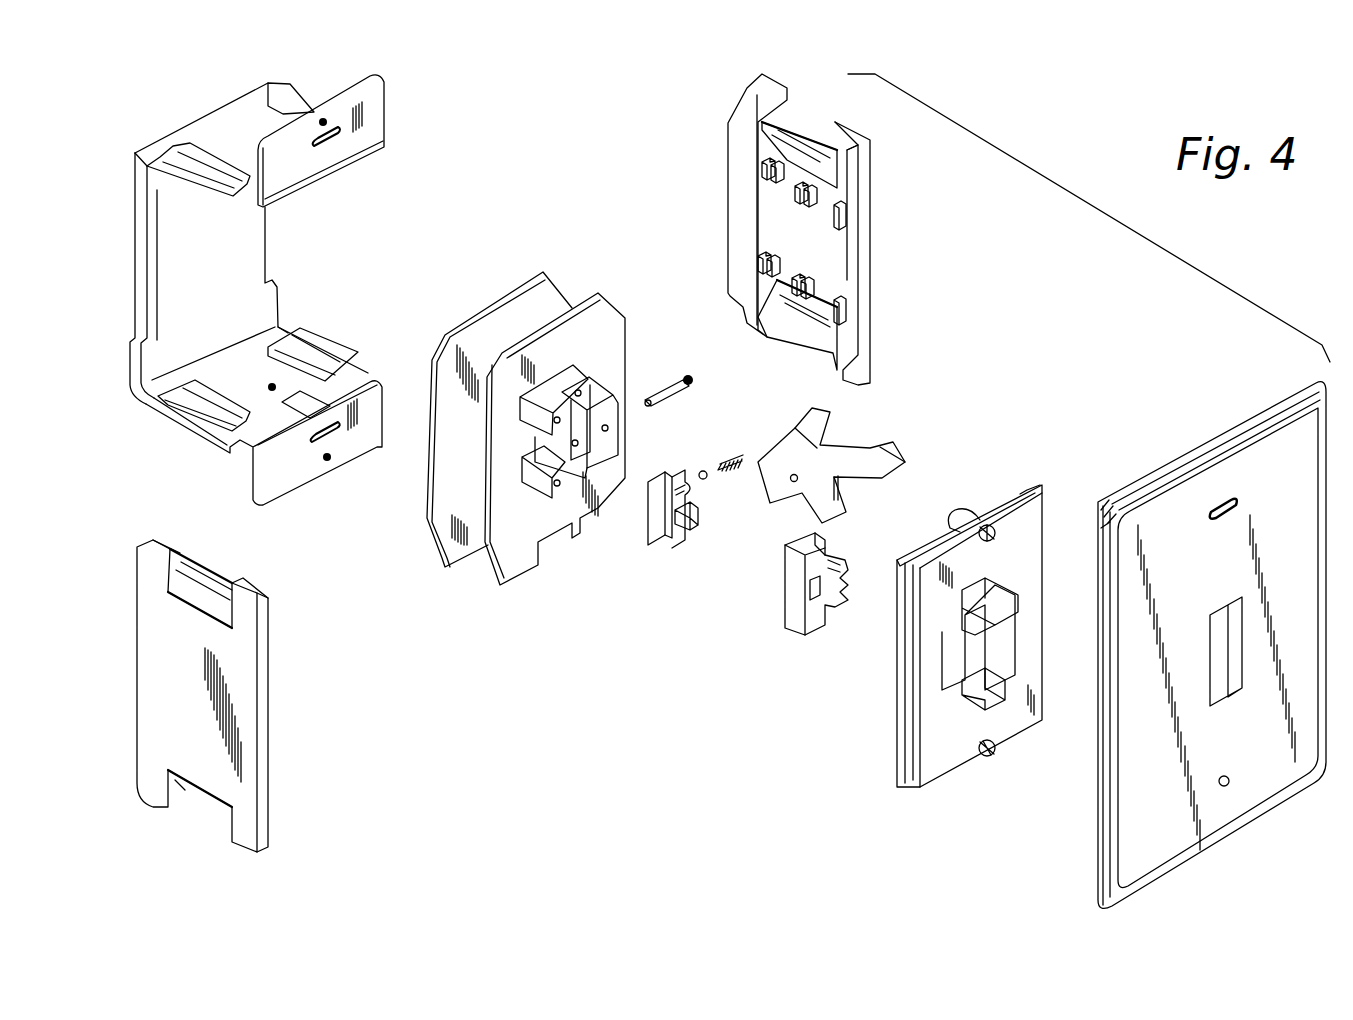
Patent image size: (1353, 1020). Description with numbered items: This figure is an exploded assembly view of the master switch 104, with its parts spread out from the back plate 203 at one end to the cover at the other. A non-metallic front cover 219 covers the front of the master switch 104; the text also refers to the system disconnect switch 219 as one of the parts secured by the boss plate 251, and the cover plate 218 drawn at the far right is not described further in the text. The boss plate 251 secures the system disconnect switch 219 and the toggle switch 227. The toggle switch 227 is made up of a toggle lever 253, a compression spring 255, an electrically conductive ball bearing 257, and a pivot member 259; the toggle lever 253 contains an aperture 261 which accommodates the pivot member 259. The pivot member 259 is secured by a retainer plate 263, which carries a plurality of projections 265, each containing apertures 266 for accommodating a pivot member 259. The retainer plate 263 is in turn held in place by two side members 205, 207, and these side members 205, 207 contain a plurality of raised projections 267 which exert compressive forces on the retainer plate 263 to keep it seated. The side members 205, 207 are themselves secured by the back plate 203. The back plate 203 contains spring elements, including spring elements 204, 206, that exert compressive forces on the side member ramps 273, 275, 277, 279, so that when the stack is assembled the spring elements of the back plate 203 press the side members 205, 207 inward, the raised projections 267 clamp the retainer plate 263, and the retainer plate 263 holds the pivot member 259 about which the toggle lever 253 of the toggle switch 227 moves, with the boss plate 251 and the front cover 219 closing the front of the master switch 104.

The master switch 104 is at (1030, 103).
The back plate 203 is at (268, 228).
The spring element 204 is at (190, 180).
The side member 205 is at (262, 682).
The spring element 206 is at (288, 98).
The side member 207 is at (868, 226).
The cover plate 218 is at (1258, 465).
The front cover 219 is at (670, 540).
The toggle switch 227 is at (900, 462).
The boss plate 251 is at (945, 750).
The toggle lever 253 is at (845, 475).
The compression spring 255 is at (743, 462).
The electrically conductive ball bearing 257 is at (706, 482).
The pivot member 259 is at (665, 398).
The aperture 261 is at (792, 492).
The retainer plate 263 is at (605, 315).
The projections 265 is at (600, 388).
The apertures 266 is at (612, 428).
The raised projections 267 is at (760, 170).
The side member ramp 273 is at (192, 575).
The side member ramp 275 is at (190, 793).
The side member ramp 277 is at (800, 340).
The side member ramp 279 is at (795, 135).